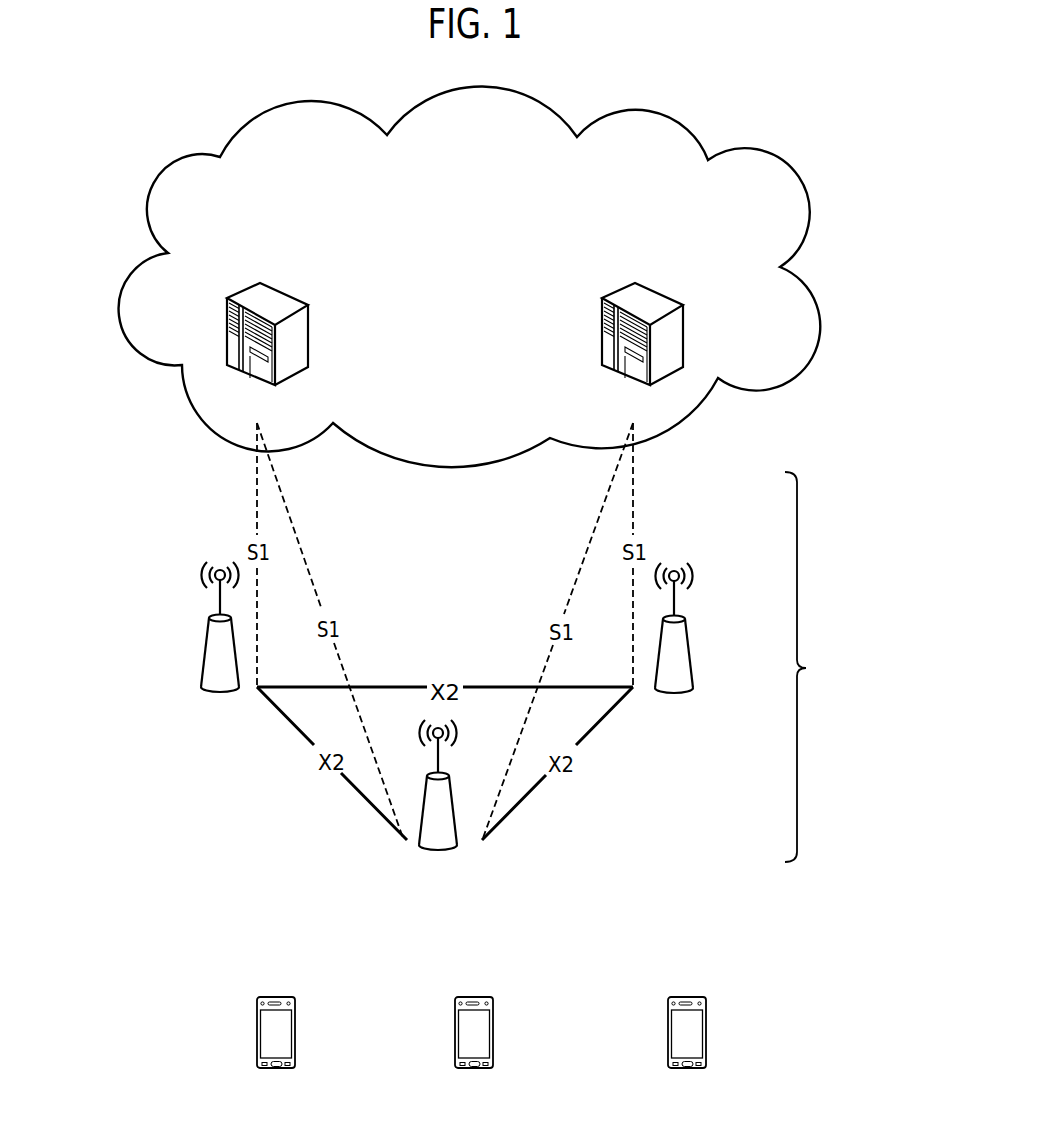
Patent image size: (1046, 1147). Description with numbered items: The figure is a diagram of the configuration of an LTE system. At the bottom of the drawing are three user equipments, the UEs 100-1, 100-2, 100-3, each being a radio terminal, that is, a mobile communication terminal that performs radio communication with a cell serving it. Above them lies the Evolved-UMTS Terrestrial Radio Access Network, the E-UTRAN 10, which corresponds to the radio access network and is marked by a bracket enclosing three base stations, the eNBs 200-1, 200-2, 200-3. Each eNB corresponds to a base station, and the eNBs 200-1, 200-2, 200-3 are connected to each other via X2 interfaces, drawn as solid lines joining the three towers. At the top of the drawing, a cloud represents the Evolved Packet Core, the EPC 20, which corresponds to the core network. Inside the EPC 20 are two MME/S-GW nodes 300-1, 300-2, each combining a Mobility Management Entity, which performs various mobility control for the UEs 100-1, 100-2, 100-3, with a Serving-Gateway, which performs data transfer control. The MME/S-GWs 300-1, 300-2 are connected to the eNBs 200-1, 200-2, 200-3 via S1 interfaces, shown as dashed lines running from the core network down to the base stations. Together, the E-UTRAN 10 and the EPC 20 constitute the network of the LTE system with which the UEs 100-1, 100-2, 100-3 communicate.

The Evolved-UMTS Terrestrial Radio Access Network (E-UTRAN) 10 is at (848, 667).
The Evolved Packet Core (EPC) 20 is at (687, 127).
The User Equipment (UE) 100-1 is at (312, 970).
The User Equipment (UE) 100-2 is at (488, 995).
The User Equipment (UE) 100-3 is at (701, 995).
The evolved Node-B (eNB) 200-1 is at (205, 653).
The evolved Node-B (eNB) 200-2 is at (458, 823).
The evolved Node-B (eNB) 200-3 is at (688, 632).
The MME/S-GW 300-1 is at (292, 293).
The MME/S-GW 300-2 is at (672, 273).